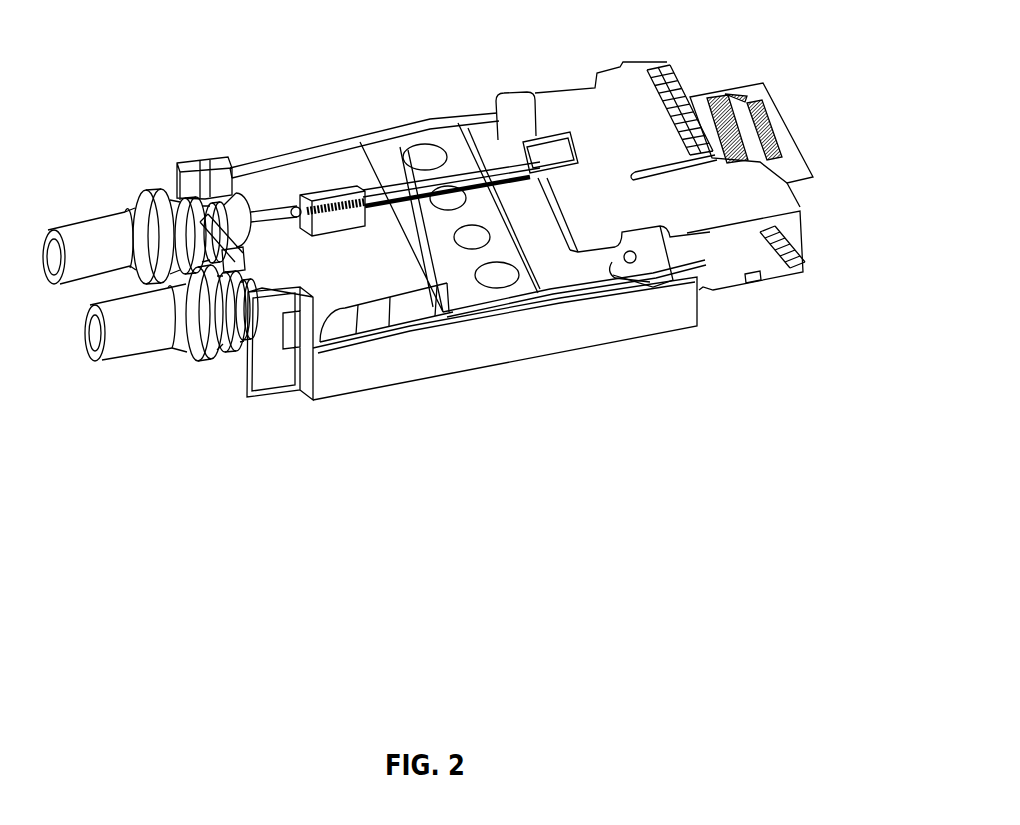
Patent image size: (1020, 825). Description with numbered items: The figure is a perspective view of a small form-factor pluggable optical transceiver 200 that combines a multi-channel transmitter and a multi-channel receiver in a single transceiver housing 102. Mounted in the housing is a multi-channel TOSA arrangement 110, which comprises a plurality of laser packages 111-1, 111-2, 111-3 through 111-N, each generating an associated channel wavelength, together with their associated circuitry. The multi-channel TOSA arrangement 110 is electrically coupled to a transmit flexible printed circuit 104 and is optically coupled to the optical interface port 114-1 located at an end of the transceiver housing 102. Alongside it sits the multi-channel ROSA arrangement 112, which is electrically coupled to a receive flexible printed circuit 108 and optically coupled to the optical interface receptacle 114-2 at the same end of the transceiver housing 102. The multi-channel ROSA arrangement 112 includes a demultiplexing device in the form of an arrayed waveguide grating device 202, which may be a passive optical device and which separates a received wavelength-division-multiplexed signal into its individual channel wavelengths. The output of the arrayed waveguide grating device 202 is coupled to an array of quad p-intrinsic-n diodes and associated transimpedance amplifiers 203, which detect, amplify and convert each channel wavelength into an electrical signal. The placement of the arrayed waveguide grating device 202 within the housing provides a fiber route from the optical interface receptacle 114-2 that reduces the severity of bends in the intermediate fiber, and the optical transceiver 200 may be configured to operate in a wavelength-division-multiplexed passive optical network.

The optical transceiver 200 is at (428, 233).
The transceiver housing 102 is at (398, 358).
The transmit flexible printed circuit 104 is at (733, 250).
The receive flexible printed circuit 108 is at (560, 96).
The multi-channel TOSA arrangement 110 is at (528, 287).
The laser package 111-1 is at (497, 170).
The laser package 111-2 is at (510, 208).
The laser package 111-3 is at (540, 243).
The laser package 111-N is at (572, 272).
The multi-channel ROSA arrangement 112 is at (361, 158).
The optical interface port 114-1 is at (97, 252).
The optical interface receptacle 114-2 is at (147, 333).
The arrayed waveguide grating device 202 is at (318, 197).
The array of PIN diodes and associated TIAs 203 is at (552, 150).